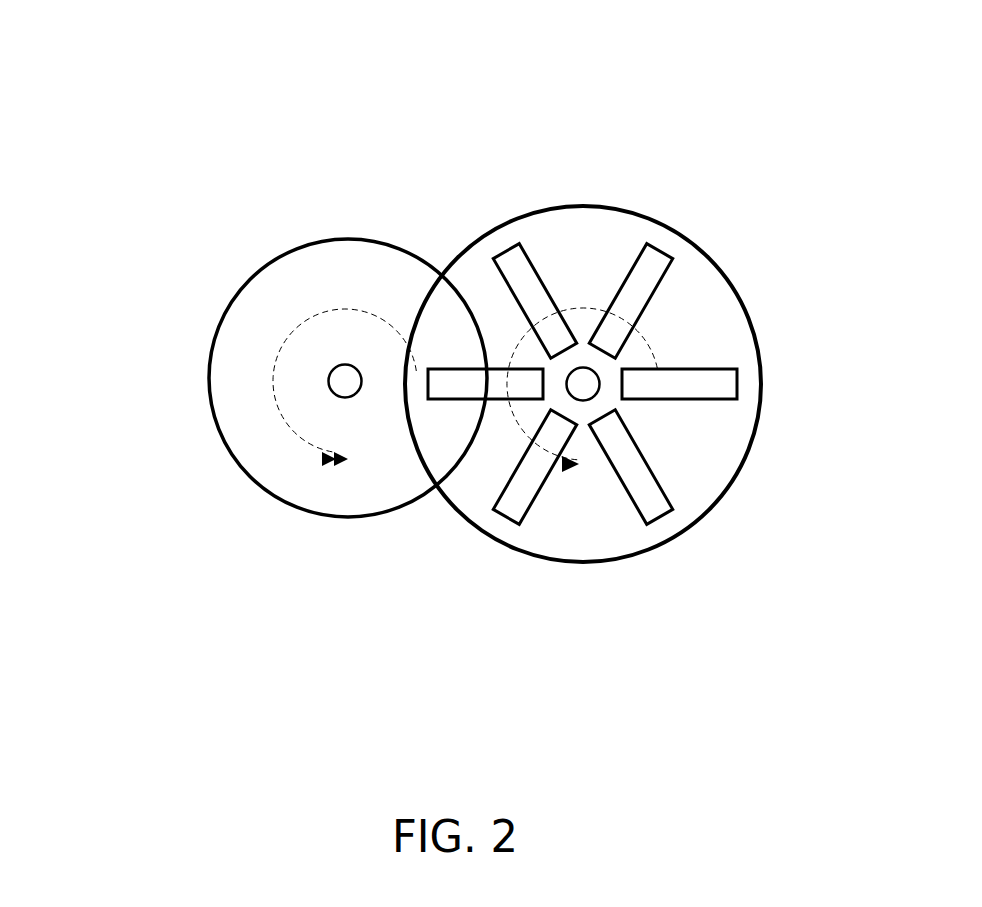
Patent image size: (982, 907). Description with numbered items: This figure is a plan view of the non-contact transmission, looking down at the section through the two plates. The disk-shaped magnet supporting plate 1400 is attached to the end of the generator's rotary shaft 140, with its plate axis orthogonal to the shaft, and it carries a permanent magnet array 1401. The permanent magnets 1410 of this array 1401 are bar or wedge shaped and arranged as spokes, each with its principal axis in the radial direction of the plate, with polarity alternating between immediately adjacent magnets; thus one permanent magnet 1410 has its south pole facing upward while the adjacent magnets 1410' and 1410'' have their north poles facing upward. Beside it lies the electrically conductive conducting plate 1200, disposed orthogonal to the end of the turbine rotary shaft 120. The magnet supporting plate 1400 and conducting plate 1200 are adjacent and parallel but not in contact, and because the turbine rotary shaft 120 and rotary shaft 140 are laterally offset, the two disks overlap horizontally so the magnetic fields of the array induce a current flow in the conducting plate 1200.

The permanent magnet array 1401 is at (494, 127).
The magnet supporting plate 1400 is at (733, 322).
The rotary shaft 140 is at (583, 368).
The permanent magnet 1410 is at (479, 242).
The adjacent magnet 1410' is at (485, 489).
The adjacent magnet 1410'' is at (648, 230).
The conducting plate 1200 is at (243, 440).
The turbine rotary shaft 120 is at (350, 394).